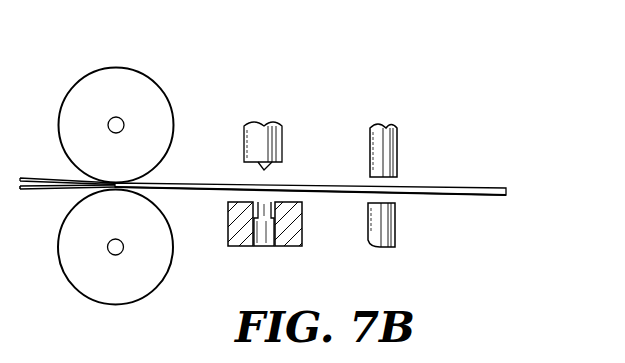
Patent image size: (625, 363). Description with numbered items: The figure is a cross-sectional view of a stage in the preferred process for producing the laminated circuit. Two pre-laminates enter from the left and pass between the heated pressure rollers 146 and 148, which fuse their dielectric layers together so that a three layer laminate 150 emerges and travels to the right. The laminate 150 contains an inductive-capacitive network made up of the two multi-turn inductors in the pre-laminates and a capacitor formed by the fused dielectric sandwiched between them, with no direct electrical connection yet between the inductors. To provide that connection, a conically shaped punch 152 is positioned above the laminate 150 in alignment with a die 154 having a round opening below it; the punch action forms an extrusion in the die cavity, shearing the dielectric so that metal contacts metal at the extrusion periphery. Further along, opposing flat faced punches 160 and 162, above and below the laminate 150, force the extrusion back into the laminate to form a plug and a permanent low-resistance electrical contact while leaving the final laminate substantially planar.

The heated pressure roller 146 is at (142, 80).
The heated pressure roller 148 is at (98, 296).
The three layer laminate 150 is at (193, 182).
The conically shaped punch 152 is at (283, 131).
The die 154 is at (293, 243).
The flat faced punch 160 is at (396, 143).
The flat faced punch 162 is at (395, 228).